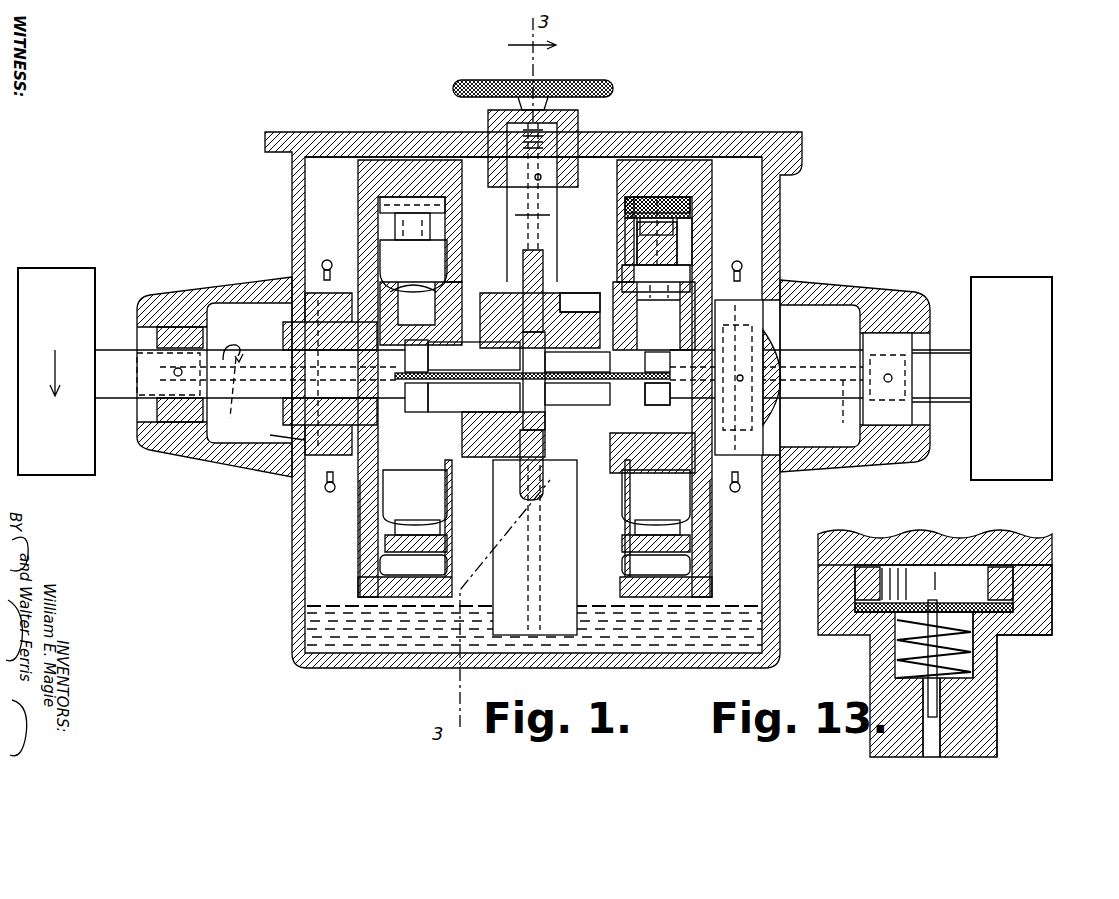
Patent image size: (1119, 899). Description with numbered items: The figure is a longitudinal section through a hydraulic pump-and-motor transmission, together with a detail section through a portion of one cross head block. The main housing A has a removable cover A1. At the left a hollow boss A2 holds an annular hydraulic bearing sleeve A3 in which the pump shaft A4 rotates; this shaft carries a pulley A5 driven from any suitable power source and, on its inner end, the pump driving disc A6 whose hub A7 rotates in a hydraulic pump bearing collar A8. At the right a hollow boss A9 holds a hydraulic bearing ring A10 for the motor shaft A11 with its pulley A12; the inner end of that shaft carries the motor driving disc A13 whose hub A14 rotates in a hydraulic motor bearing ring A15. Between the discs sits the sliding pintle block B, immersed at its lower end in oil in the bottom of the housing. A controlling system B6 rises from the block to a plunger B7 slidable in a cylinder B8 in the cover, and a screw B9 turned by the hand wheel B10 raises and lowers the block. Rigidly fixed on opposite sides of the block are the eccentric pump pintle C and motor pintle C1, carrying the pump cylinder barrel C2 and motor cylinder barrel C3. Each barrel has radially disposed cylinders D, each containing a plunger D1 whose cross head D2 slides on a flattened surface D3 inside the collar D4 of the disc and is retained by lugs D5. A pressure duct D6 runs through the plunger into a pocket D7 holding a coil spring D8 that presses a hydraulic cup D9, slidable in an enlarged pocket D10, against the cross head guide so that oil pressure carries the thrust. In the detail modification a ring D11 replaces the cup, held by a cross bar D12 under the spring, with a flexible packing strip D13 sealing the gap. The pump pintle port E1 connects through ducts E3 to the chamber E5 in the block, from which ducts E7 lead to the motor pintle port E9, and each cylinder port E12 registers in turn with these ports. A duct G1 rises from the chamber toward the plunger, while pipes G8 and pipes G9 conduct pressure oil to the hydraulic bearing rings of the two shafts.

In FIG. 1, the main housing A is at (782, 200).
In FIG. 1, the removable cover A1 is at (700, 137).
In FIG. 1, the hollow boss A2 is at (220, 290).
In FIG. 1, the annular hydraulic bearing sleeve A3 is at (173, 328).
In FIG. 1, the pump shaft A4 is at (124, 392).
In FIG. 1, the pulley A5 is at (62, 278).
In FIG. 1, the pump driving disc A6 is at (370, 500).
In FIG. 1, the hub A7 is at (290, 332).
In FIG. 1, the hydraulic pump bearing collar A8 is at (277, 427).
In FIG. 1, the hollow boss A9 is at (835, 292).
In FIG. 1, the hydraulic bearing ring A10 is at (887, 340).
In FIG. 1, the motor shaft A11 is at (943, 363).
In FIG. 1, the pulley A12 is at (1007, 287).
In FIG. 1, the motor driving disc A13 is at (702, 520).
In FIG. 1, the hub A14 is at (765, 338).
In FIG. 1, the hydraulic motor bearing ring A15 is at (752, 437).
In FIG. 1, the sliding pintle block B is at (557, 225).
In FIG. 1, the controlling system B6 is at (518, 212).
In FIG. 1, the plunger B7 is at (580, 128).
In FIG. 1, the cylinder B8 is at (490, 130).
In FIG. 1, the screw B9 is at (553, 83).
In FIG. 1, the hand wheel B10 is at (485, 82).
In FIG. 1, the pump pintle C is at (472, 305).
In FIG. 1, the motor pintle C1 is at (600, 330).
In FIG. 1, the pump cylinder barrel C2 is at (443, 448).
In FIG. 1, the motor cylinder barrel C3 is at (627, 457).
In FIG. 1, the pump or motor cylinders D is at (460, 247).
In FIG. 1, the plunger D1 is at (433, 232).
In FIG. 13, the plunger D1 is at (982, 708).
In FIG. 1, the cross head D2 is at (380, 200).
In FIG. 13, the cross head D2 is at (1000, 645).
In FIG. 13, the flattened surface D3 is at (1033, 557).
In FIG. 1, the collar D4 is at (412, 173).
In FIG. 13, the collar D4 is at (925, 535).
In FIG. 1, the lugs D5 is at (378, 228).
In FIG. 1, the pressure duct D6 is at (683, 243).
In FIG. 13, the pressure duct D6 is at (937, 738).
In FIG. 1, the pocket D7 is at (640, 225).
In FIG. 13, the pocket D7 is at (900, 668).
In FIG. 1, the coil spring D8 is at (636, 242).
In FIG. 13, the coil spring D8 is at (957, 677).
In FIG. 1, the hydraulic cup D9 is at (663, 197).
In FIG. 1, the enlarged pocket D10 is at (625, 208).
In FIG. 13, the enlarged pocket D10 is at (870, 614).
In FIG. 13, the ring D11 is at (872, 567).
In FIG. 13, the cross bar D12 is at (957, 603).
In FIG. 13, the packing strip D13 is at (1015, 608).
In FIG. 1, the port E1 is at (537, 376).
In FIG. 1, the ducts E3 is at (474, 377).
In FIG. 1, the chamber E5 is at (531, 500).
In FIG. 1, the ducts E7 is at (532, 390).
In FIG. 1, the port E9 is at (657, 395).
In FIG. 1, the cylinder port E12 is at (537, 316).
In FIG. 1, the duct G1 is at (545, 178).
In FIG. 1, the pipes G8 is at (327, 260).
In FIG. 1, the pipes G9 is at (322, 490).